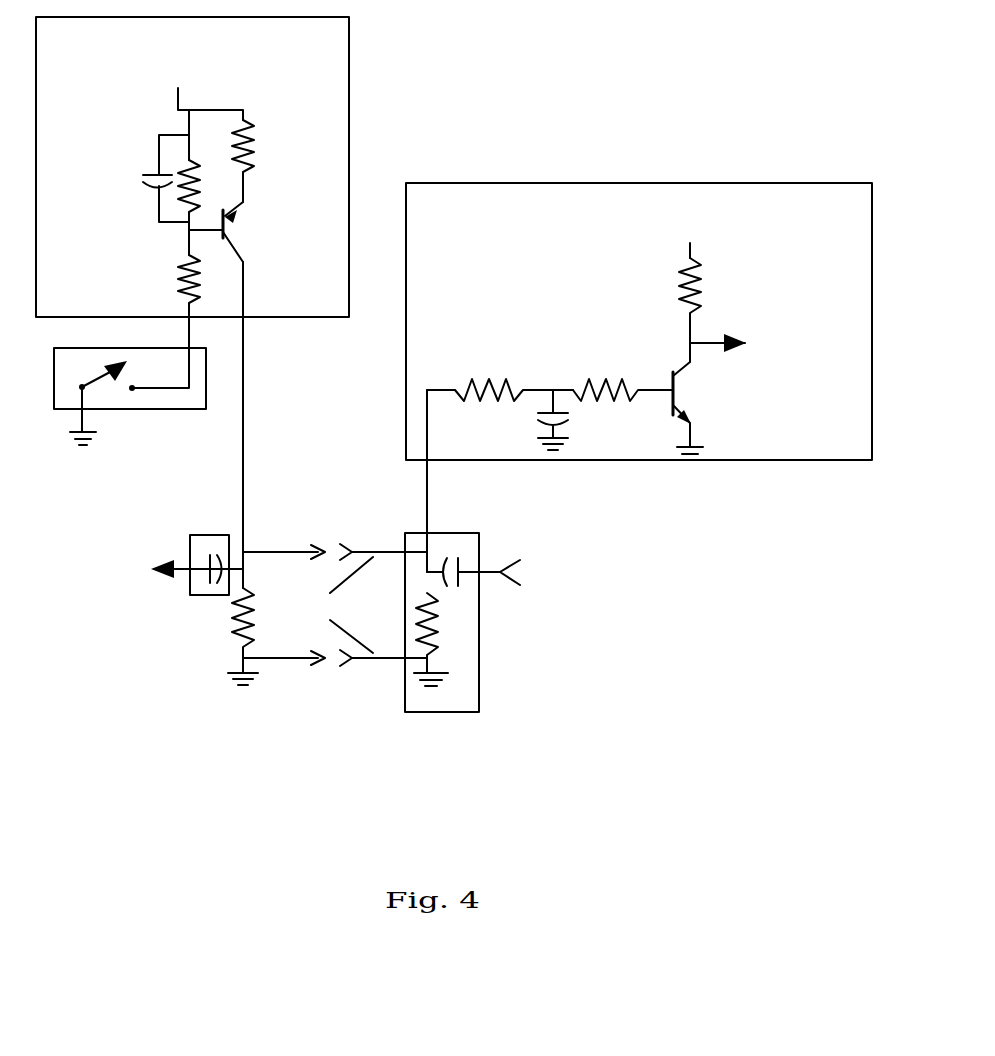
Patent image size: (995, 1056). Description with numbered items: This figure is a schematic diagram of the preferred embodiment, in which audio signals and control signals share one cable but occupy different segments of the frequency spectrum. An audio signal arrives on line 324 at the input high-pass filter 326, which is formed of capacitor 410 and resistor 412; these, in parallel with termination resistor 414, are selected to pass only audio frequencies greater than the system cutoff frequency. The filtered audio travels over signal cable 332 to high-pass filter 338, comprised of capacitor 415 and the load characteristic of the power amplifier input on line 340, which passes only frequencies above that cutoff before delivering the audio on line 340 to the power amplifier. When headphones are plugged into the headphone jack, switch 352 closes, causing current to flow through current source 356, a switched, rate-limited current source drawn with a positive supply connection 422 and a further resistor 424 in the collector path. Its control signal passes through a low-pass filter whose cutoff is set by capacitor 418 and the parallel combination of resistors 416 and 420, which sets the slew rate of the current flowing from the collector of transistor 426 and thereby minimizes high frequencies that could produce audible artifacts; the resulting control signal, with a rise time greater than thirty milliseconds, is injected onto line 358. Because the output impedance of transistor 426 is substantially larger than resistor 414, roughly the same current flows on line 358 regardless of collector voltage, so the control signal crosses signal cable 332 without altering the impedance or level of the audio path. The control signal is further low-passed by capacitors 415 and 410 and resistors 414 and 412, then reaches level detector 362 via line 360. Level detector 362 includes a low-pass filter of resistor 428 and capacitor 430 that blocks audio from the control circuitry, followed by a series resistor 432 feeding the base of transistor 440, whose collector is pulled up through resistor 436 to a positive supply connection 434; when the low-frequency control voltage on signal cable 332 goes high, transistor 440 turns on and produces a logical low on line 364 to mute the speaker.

The current source 356 is at (349, 81).
The level detector 362 is at (617, 183).
The +12V supply 422 is at (205, 70).
The resistor 420 is at (205, 173).
The capacitor 418 is at (143, 183).
The resistor 424 is at (265, 147).
The transistor 426 is at (228, 230).
The resistor 416 is at (168, 283).
The switch 352 is at (137, 409).
The line 358 is at (243, 392).
The +12V supply 434 is at (712, 229).
The resistor 436 is at (705, 278).
The line 364 is at (755, 342).
The transistor 440 is at (697, 402).
The resistor 428 is at (482, 377).
The resistor 432 is at (607, 376).
The capacitor 430 is at (575, 418).
The high-pass filter 338 is at (188, 557).
The capacitor 415 is at (213, 553).
The line 340 is at (150, 577).
The termination resistor 414 is at (223, 633).
The signal cable 332 is at (335, 605).
The line 360 is at (427, 502).
The high-pass filter 326 is at (443, 712).
The line 324 is at (527, 575).
The capacitor 410 is at (452, 585).
The resistor 412 is at (445, 628).